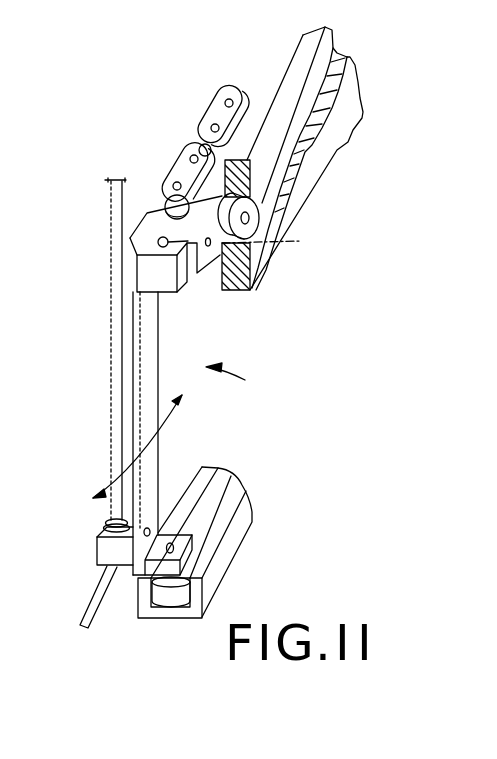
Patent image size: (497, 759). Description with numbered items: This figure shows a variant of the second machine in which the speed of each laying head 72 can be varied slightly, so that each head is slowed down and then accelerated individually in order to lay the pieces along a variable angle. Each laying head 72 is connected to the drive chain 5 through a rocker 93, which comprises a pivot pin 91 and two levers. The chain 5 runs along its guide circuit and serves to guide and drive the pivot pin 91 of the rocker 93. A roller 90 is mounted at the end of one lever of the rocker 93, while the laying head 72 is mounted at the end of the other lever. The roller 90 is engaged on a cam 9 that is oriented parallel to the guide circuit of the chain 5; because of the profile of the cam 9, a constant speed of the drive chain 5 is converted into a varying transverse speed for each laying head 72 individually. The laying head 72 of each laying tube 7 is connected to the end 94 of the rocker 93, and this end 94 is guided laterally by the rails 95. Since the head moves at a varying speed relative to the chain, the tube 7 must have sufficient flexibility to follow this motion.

The drive chain 5 is at (200, 145).
The laying tube 7 is at (118, 291).
The cam 9 is at (318, 178).
The roller 90 is at (260, 203).
The pivot pin 91 is at (288, 245).
The rocker 93 is at (189, 430).
The end of the rocker 94 is at (152, 488).
The rails 95 is at (250, 522).
The laying head 72 is at (86, 602).